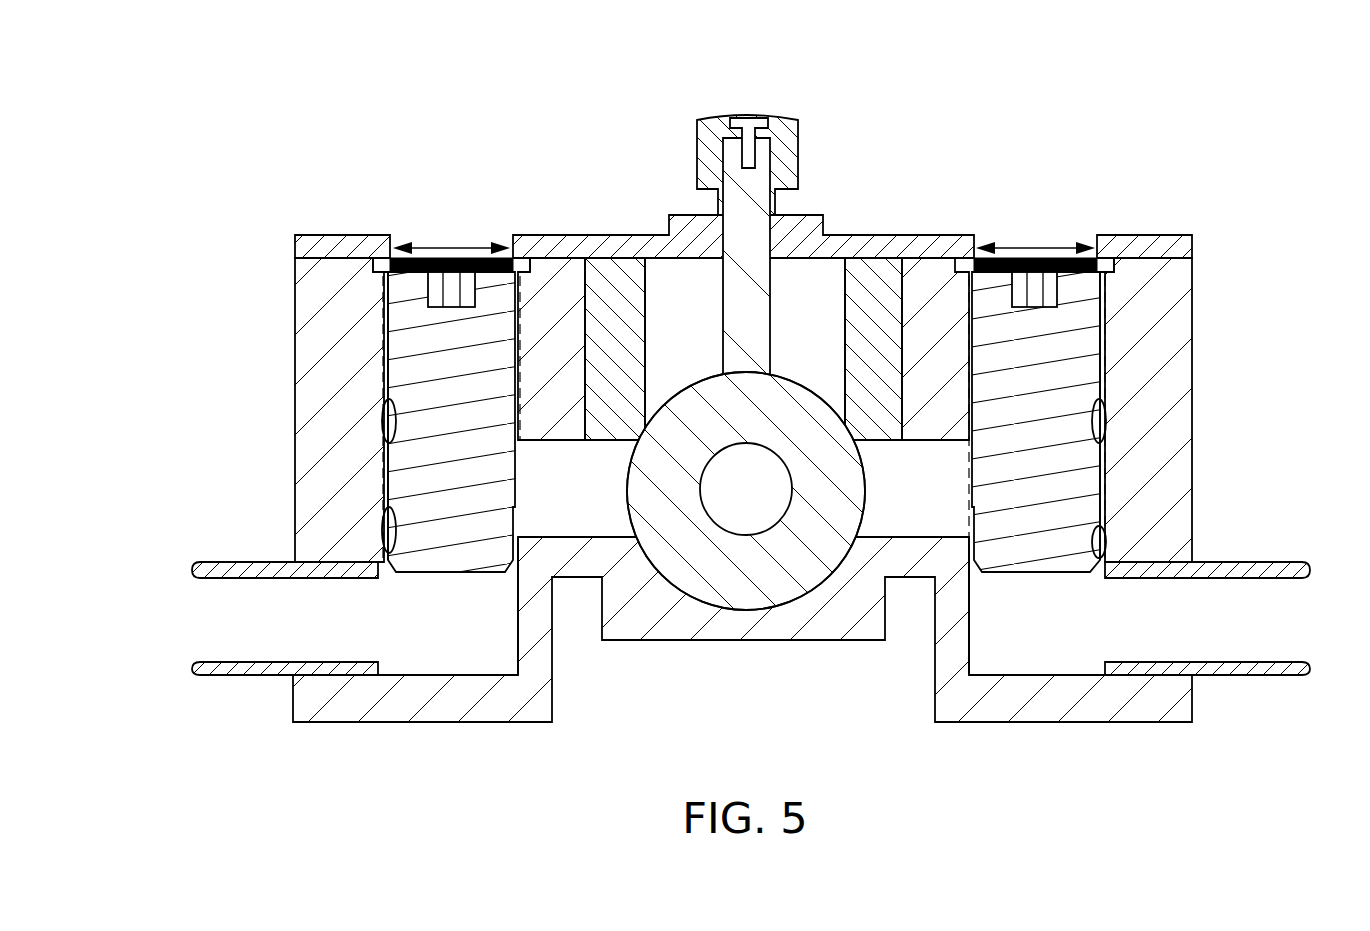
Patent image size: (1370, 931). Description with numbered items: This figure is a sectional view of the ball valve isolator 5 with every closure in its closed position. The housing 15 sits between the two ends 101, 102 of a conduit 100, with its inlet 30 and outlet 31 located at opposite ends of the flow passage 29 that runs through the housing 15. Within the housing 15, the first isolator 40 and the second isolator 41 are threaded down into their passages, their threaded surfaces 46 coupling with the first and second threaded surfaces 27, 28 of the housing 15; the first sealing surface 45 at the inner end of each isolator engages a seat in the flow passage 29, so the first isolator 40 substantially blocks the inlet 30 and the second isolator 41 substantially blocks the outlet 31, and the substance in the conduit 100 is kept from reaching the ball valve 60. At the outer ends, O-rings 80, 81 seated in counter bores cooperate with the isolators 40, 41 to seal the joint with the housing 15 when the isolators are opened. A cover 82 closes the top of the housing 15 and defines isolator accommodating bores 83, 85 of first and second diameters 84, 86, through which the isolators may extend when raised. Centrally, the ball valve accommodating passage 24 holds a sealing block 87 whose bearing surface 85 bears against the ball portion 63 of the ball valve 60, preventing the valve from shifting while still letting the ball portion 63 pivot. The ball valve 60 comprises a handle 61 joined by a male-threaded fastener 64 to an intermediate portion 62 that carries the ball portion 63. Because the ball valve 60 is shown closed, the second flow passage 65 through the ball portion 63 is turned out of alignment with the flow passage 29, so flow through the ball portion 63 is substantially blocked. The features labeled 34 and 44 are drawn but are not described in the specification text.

The ball valve isolator 5 is at (1197, 166).
The housing 15 is at (1243, 357).
The ball valve accommodating passage 24 is at (828, 278).
The first threaded surface 27 is at (390, 447).
The second threaded surface 28 is at (1100, 400).
The flow passage 29 is at (908, 502).
The inlet 30 is at (393, 520).
The outlet 31 is at (1100, 507).
The valve seat 34 is at (790, 592).
The first isolator 40 is at (396, 303).
The second isolator 41 is at (1085, 318).
The protrusion 44 is at (428, 289).
The first sealing surface 45 is at (513, 556).
The threaded surface 46 is at (388, 427).
The ball valve 60 is at (790, 394).
The handle 61 is at (697, 140).
The intermediate portion 62 is at (722, 290).
The ball portion 63 is at (735, 596).
The threaded fastener 64 is at (748, 116).
The second flow passage 65 is at (737, 507).
The O-ring 80 is at (374, 258).
The O-ring 81 is at (1112, 264).
The cover 82 is at (576, 240).
The isolator accommodating bore 83 is at (510, 246).
The first diameter 84 is at (452, 242).
The isolator accommodating bore 85 is at (1098, 262).
The second diameter 86 is at (1040, 242).
The sealing block 87 is at (608, 272).
The conduit 100 is at (203, 677).
The end of conduit 101 is at (262, 690).
The end of conduit 102 is at (1220, 690).